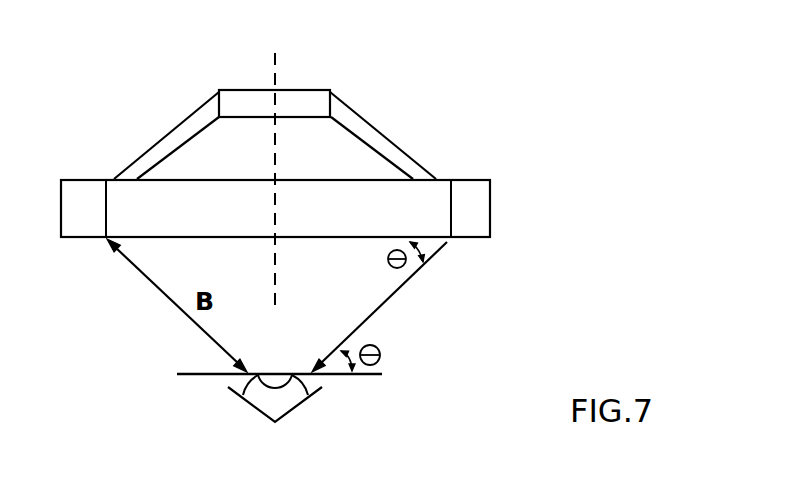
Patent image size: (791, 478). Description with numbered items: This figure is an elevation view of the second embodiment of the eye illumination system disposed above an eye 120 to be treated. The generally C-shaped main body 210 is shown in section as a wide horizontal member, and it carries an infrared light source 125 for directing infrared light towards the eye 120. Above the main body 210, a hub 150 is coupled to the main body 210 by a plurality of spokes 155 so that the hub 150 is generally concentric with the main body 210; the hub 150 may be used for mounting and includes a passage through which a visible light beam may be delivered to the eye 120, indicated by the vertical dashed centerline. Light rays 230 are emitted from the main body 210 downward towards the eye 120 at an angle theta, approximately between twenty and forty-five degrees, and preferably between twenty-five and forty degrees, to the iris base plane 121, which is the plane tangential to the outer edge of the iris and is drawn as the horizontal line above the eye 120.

The eye 120 is at (297, 407).
The iris base plane 121 is at (363, 375).
The infrared light source 125 is at (173, 217).
The hub 150 is at (288, 88).
The spokes 155 is at (160, 143).
The main body 210 is at (470, 178).
The light rays 230 is at (388, 298).